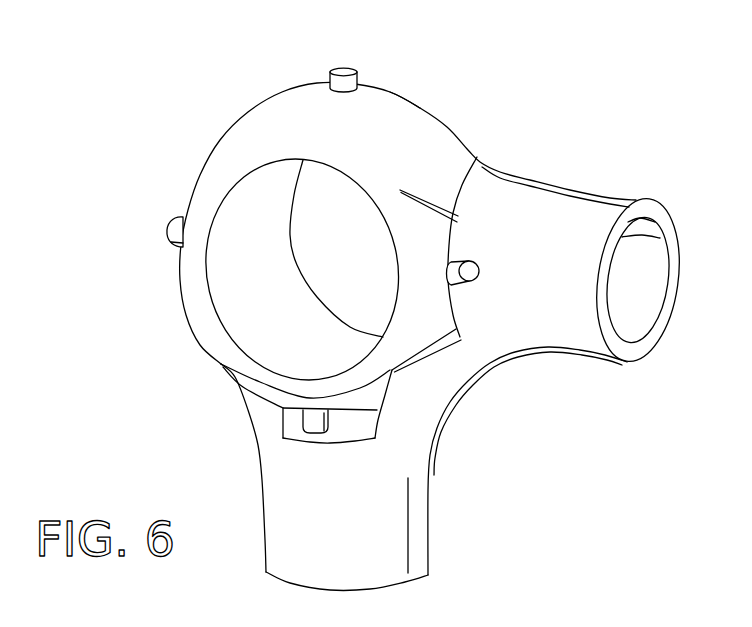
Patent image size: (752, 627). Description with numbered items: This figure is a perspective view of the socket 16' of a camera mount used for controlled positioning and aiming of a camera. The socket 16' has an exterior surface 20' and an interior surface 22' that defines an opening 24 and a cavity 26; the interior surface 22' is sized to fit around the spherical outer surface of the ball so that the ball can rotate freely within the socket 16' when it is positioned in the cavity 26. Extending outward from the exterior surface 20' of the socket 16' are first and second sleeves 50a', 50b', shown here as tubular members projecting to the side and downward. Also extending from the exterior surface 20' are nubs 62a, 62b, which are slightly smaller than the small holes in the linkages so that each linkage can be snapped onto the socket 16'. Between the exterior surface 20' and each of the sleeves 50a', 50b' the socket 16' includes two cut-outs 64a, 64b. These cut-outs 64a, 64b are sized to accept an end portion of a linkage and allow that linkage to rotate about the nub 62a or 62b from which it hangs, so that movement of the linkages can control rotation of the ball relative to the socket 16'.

The socket 16' is at (396, 309).
The exterior surface 20' is at (430, 82).
The interior surface 22' is at (268, 269).
The opening 24 is at (317, 205).
The cavity 26 is at (375, 237).
The first sleeve 50a' is at (565, 361).
The second sleeve 50b' is at (373, 477).
The nub 62a is at (344, 70).
The nub 62b is at (175, 230).
The cut-out 64a is at (433, 233).
The cut-out 64b is at (262, 410).